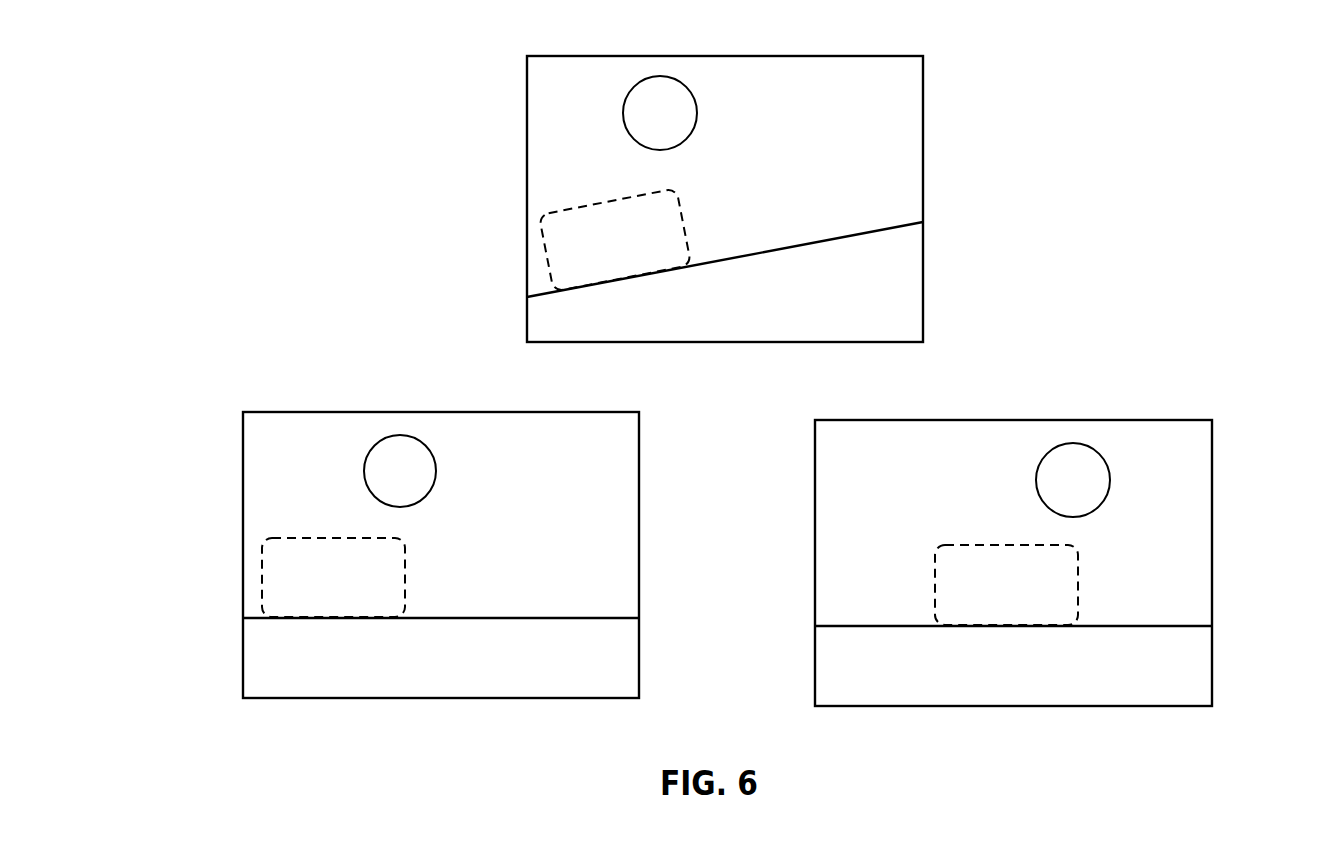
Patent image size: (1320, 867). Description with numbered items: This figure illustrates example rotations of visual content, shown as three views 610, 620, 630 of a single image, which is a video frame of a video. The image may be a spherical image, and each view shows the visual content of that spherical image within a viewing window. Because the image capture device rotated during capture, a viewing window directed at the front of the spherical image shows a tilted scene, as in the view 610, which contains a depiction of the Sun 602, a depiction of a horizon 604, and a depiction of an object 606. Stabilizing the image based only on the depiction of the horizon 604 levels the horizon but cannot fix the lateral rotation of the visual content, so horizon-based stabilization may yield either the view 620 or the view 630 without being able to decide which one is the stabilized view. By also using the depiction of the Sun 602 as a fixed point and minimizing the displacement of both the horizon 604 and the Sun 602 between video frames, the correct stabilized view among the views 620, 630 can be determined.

The depiction of the Sun 602 is at (623, 116).
The depiction of a horizon 604 is at (903, 227).
The depiction of an object 606 is at (543, 260).
The view 610 is at (725, 183).
The view 620 is at (441, 537).
The view 630 is at (1013, 546).